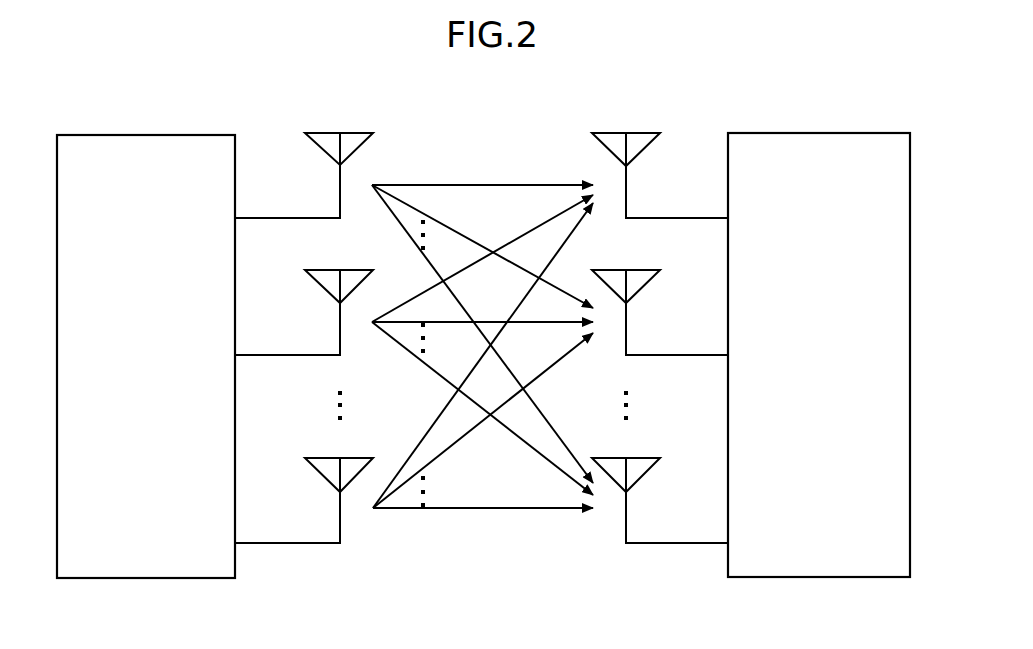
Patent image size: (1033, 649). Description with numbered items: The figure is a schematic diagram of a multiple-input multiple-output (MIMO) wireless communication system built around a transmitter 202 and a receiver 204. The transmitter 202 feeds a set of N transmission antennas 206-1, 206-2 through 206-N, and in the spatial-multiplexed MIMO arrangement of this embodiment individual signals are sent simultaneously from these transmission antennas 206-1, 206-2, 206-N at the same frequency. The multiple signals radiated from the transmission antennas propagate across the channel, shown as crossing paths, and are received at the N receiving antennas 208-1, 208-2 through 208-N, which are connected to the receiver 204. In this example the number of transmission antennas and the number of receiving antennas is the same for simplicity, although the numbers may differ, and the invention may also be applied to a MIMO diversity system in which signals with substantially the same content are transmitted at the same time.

The transmitter 202 is at (187, 135).
The receiver 204 is at (852, 133).
The transmission antenna 206-1 is at (340, 195).
The transmission antenna 206-2 is at (340, 330).
The transmission antenna 206-N is at (340, 520).
The receiving antenna 208-1 is at (626, 193).
The receiving antenna 208-2 is at (626, 328).
The receiving antenna 208-N is at (626, 518).